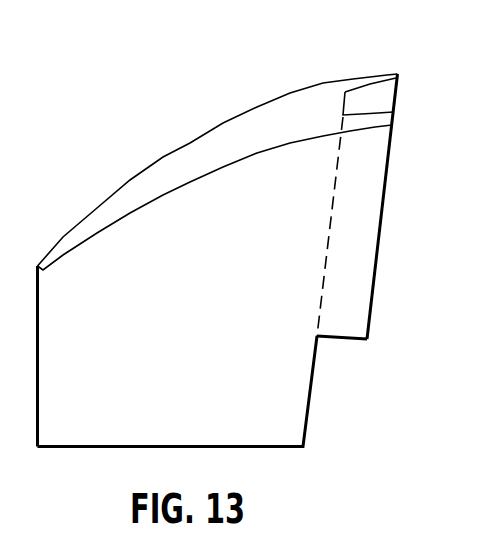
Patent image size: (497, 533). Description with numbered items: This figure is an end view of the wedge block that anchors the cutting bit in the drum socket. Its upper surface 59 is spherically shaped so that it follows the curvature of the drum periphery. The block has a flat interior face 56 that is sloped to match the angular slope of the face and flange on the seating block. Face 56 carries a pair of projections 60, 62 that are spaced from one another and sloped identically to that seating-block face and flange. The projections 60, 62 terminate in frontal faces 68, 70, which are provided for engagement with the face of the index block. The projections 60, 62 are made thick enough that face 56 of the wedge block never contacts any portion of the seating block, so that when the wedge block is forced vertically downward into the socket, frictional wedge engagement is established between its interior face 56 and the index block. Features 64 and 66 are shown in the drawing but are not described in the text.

The flat interior face 56 is at (344, 102).
The upper surface 59 is at (260, 125).
The projection 60 is at (382, 123).
The projection 62 is at (398, 74).
The recess 64 is at (382, 100).
The base 66 is at (277, 447).
The frontal face 68 is at (373, 361).
The frontal face 70 is at (340, 340).